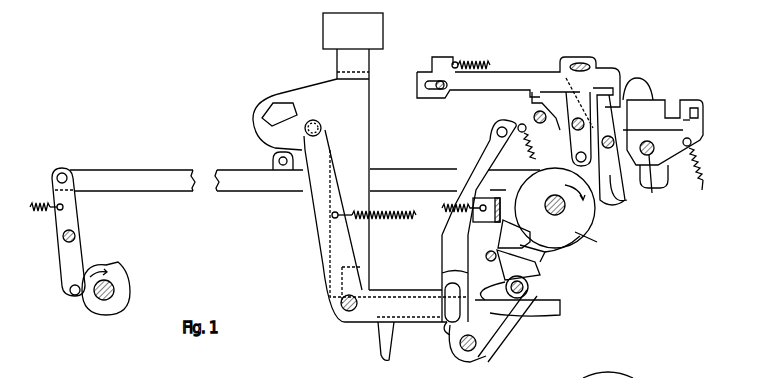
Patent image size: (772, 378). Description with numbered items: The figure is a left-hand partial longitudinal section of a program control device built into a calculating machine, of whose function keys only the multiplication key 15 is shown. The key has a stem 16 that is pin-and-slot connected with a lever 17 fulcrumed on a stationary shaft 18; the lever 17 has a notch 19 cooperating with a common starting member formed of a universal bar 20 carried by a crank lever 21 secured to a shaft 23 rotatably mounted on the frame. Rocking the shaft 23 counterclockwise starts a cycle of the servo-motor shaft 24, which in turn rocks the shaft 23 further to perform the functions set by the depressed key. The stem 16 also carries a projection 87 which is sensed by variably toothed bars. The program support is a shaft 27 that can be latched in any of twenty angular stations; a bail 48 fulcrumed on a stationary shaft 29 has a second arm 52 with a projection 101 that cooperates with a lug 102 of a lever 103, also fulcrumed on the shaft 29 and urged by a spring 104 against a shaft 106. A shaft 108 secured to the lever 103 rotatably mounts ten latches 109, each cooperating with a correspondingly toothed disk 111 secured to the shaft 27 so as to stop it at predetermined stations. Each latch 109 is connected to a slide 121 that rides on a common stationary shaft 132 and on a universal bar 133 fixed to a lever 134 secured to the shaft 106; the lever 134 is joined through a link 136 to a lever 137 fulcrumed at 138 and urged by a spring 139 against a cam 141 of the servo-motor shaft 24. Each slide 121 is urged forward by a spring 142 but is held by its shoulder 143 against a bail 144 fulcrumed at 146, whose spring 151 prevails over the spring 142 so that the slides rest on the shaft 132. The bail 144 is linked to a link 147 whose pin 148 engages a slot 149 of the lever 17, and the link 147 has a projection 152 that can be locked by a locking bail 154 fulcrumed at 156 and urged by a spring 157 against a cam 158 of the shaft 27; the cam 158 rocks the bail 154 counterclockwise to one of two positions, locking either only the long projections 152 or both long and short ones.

The multiplication key 15 is at (378, 33).
The stem 16 is at (365, 121).
The lever 17 is at (320, 247).
The stationary shaft 18 is at (349, 311).
The notch 19 is at (508, 320).
The universal bar 20 is at (524, 287).
The crank lever 21 is at (497, 337).
The shaft 23 is at (470, 352).
The servo-motor shaft 24 is at (108, 300).
The program shaft 27 is at (565, 205).
The stationary shaft 29 is at (654, 176).
The bail 48 is at (687, 167).
The second arm 52 is at (637, 78).
The projection 87 is at (565, 305).
The projection 101 is at (660, 100).
The lug 102 is at (690, 100).
The lever 103 is at (676, 107).
The spring 104 is at (702, 190).
The shaft 106 is at (565, 57).
The shaft 108 is at (600, 170).
The latch 109 is at (638, 205).
The toothed disk 111 is at (580, 230).
The slide 121 is at (507, 72).
The stationary shaft 132 is at (445, 90).
The universal bar 133 is at (583, 62).
The lever 134 is at (565, 100).
The link 136 is at (190, 193).
The lever 137 is at (76, 208).
The fulcrum 138 is at (76, 236).
The spring 139 is at (38, 212).
The cam 141 is at (120, 276).
The spring 142 is at (468, 57).
The shoulder 143 is at (525, 93).
The bail 144 is at (545, 87).
The fulcrum 146 is at (497, 113).
The link 147 is at (443, 253).
The pin 148 is at (447, 328).
The slot 149 is at (448, 290).
The spring 151 is at (525, 145).
The projection 152 is at (514, 234).
The locking bail 154 is at (500, 196).
The fulcrum 156 is at (535, 266).
The spring 157 is at (450, 212).
The cam 158 is at (550, 250).